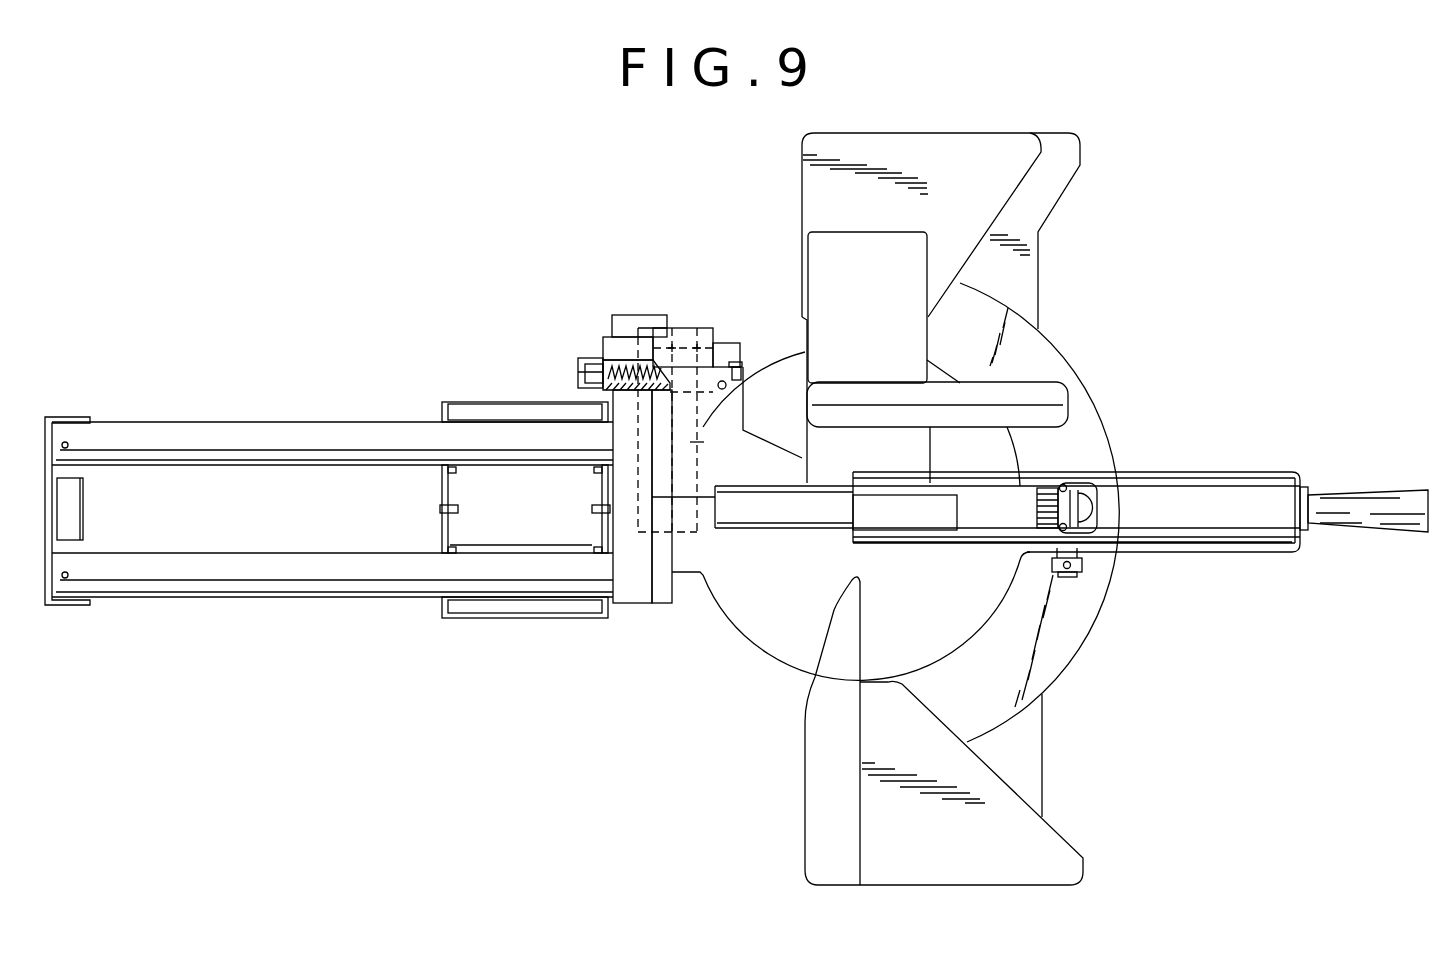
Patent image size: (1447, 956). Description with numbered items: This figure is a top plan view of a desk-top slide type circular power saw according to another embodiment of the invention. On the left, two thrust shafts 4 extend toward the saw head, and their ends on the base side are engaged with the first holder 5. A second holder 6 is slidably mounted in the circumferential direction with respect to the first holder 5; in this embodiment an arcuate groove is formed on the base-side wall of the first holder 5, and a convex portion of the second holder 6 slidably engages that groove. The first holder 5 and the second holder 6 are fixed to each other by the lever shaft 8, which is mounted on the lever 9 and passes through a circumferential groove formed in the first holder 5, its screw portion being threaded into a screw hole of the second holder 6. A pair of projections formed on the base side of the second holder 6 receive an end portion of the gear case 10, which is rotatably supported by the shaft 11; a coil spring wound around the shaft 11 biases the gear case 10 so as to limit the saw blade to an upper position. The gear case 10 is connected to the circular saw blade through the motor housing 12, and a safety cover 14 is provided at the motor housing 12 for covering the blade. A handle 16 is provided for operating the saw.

The thrust shaft 4 is at (234, 441).
The first holder 5 is at (634, 604).
The second holder 6 is at (707, 337).
The lever shaft 8 is at (627, 360).
The lever 9 is at (578, 360).
The gear case 10 is at (747, 467).
The shaft 11 is at (685, 330).
The motor housing 12 is at (893, 292).
The safety cover 14 is at (1100, 523).
The handle 16 is at (1050, 393).